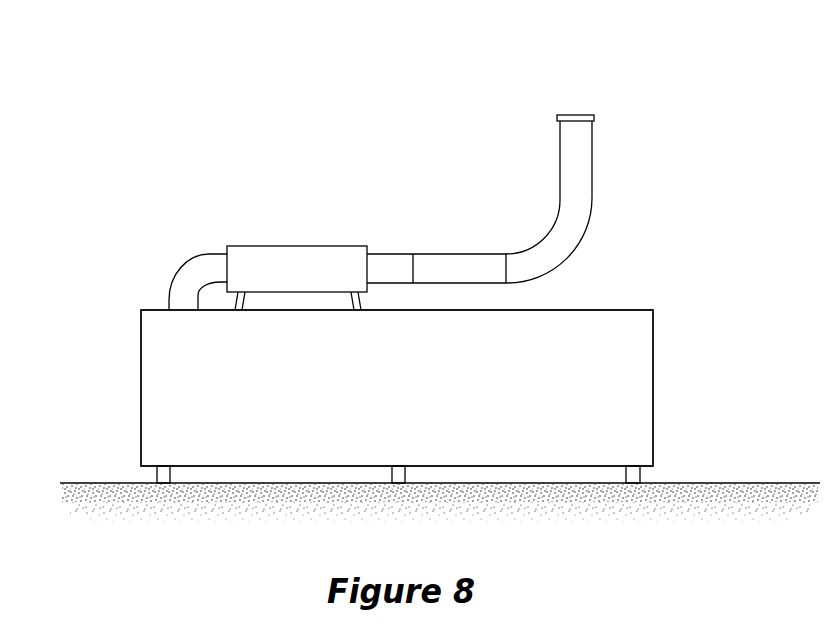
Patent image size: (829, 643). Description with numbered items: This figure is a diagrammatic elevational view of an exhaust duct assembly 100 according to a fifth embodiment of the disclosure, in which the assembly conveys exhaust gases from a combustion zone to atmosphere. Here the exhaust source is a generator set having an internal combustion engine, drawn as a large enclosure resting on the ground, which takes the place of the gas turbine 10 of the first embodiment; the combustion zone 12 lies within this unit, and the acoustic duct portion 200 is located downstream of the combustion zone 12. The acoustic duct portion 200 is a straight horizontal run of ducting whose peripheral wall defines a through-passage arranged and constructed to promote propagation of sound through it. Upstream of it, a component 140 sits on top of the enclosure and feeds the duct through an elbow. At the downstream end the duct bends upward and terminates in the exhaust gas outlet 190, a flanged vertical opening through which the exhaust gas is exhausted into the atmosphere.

The exhaust duct assembly 100 is at (285, 101).
The gas turbine 10 is at (140, 400).
The combustion zone 12 is at (593, 413).
The muffler 140 is at (270, 246).
The exhaust gas outlet 190 is at (573, 115).
The acoustic duct portion 200 is at (477, 273).